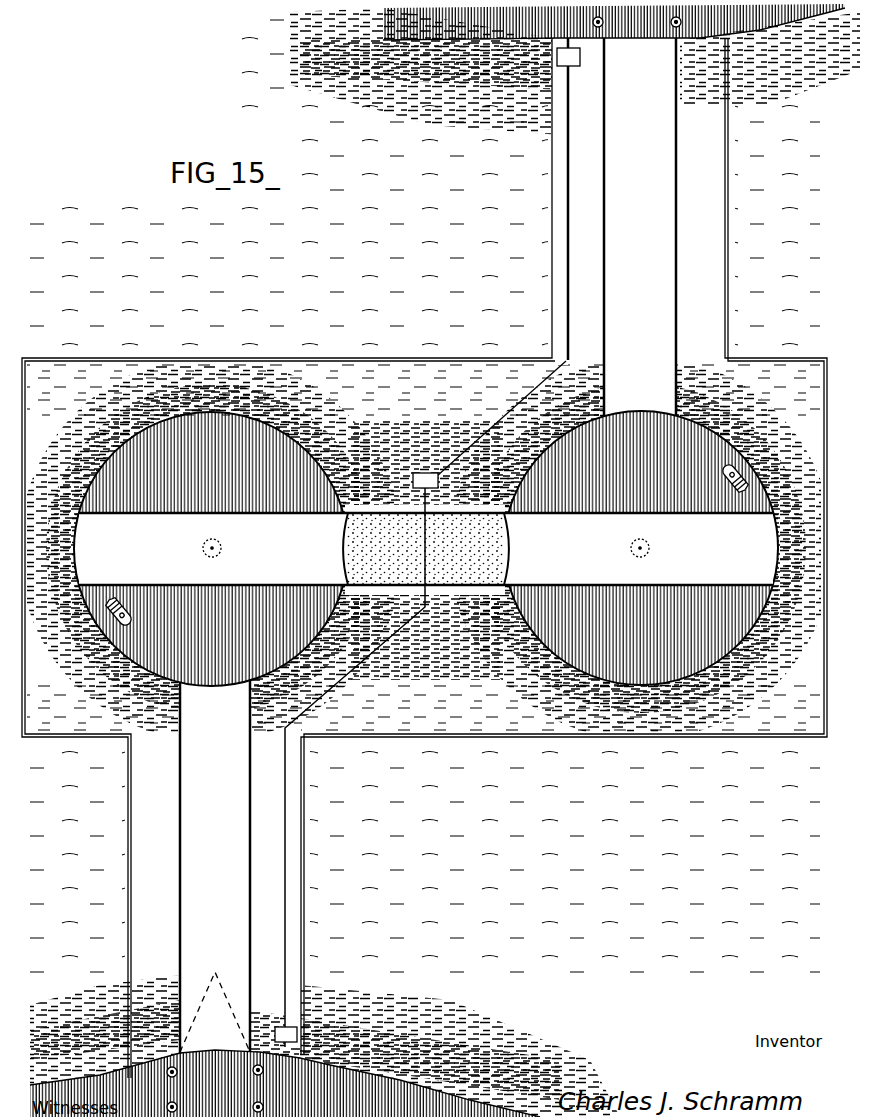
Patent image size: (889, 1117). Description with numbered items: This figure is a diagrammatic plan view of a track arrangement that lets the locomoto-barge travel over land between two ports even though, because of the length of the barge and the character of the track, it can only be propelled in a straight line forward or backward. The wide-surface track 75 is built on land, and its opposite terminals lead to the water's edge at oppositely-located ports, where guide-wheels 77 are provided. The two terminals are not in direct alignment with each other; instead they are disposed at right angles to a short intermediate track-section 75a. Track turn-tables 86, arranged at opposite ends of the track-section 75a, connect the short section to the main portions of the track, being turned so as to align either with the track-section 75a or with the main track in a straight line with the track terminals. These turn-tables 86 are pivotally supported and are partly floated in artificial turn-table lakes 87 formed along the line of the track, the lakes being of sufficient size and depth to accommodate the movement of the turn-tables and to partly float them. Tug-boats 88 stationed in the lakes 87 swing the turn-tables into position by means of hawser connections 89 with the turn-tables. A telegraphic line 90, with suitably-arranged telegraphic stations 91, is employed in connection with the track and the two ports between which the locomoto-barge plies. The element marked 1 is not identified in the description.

The hopper outline 1 is at (215, 1012).
The track 75 is at (428, 546).
The short intermediate track-section 75a is at (425, 549).
The guide-wheels 77 is at (672, 28).
The track turn-tables 86 is at (426, 549).
The turn-table lakes 87 is at (130, 497).
The tug-boats 88 is at (130, 612).
The hawser connections 89 is at (110, 597).
The telegraphic line 90 is at (568, 268).
The telegraphic stations 91 is at (566, 57).